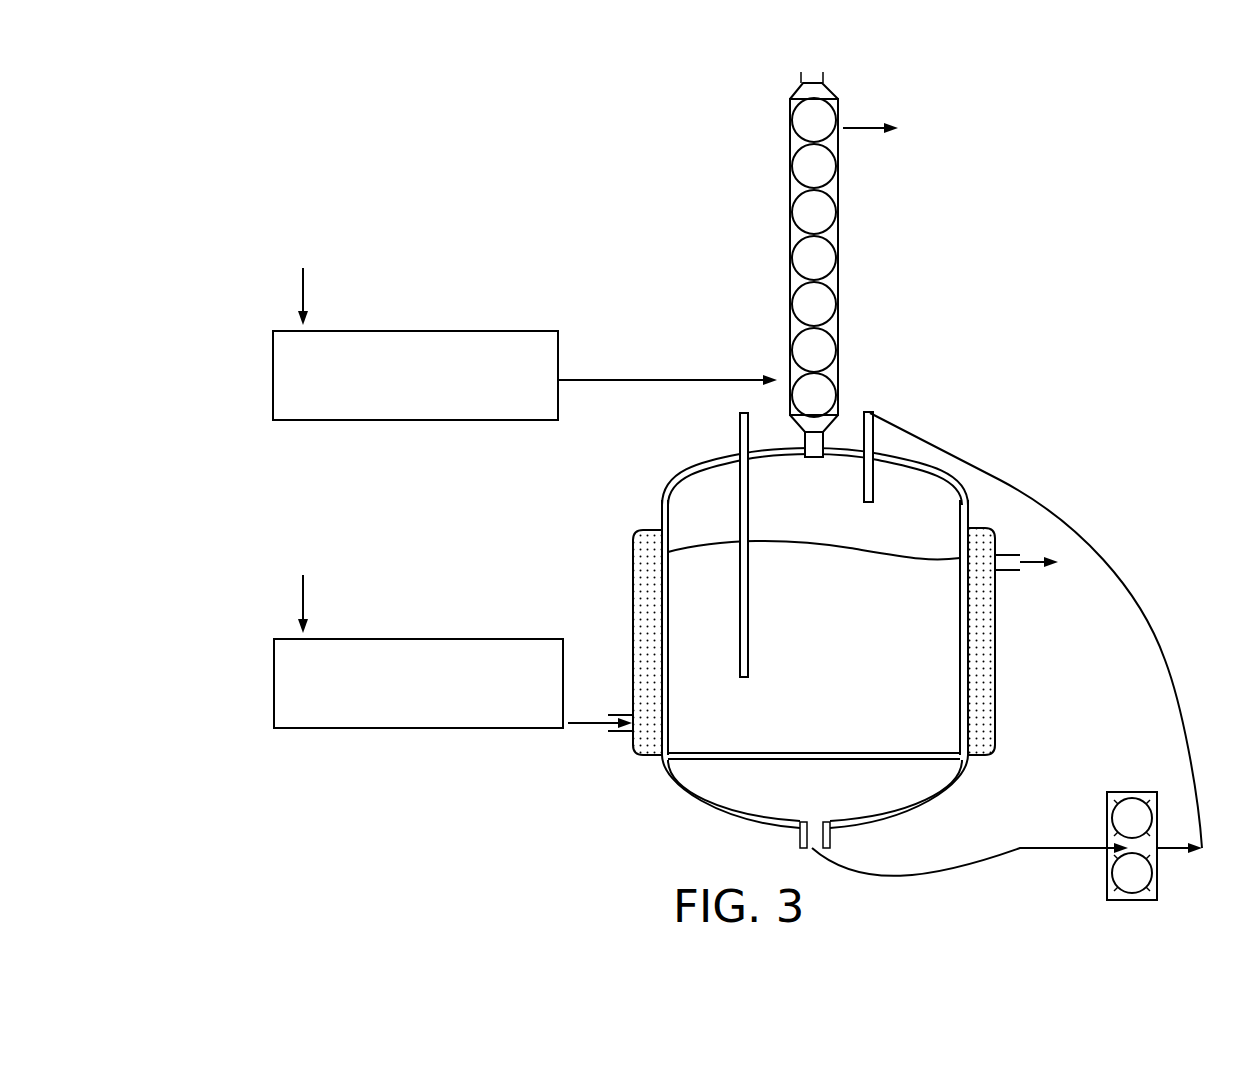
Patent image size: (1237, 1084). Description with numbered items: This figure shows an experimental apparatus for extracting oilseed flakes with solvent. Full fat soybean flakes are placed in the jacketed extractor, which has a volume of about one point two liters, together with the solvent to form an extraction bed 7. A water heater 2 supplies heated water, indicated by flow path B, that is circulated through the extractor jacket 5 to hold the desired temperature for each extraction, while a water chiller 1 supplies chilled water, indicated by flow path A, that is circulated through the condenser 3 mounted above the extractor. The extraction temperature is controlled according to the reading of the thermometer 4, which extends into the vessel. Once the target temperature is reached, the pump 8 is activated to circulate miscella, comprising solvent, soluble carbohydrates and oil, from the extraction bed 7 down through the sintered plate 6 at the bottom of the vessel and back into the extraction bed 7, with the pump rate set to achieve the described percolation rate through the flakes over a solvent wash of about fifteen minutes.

The water chiller 1 is at (295, 391).
The water heater 2 is at (290, 706).
The condenser 3 is at (778, 236).
The thermometer 4 is at (726, 432).
The extractor jacket 5 is at (648, 743).
The sintered plate 6 is at (850, 761).
The extraction bed 7 is at (878, 652).
The pump 8 is at (1091, 868).